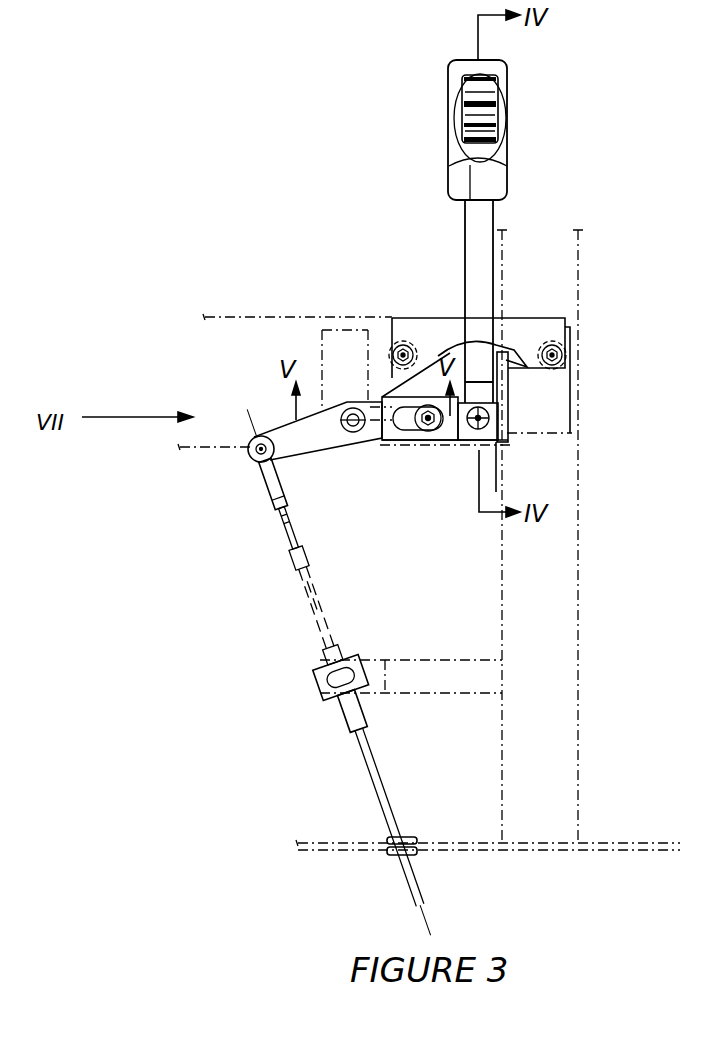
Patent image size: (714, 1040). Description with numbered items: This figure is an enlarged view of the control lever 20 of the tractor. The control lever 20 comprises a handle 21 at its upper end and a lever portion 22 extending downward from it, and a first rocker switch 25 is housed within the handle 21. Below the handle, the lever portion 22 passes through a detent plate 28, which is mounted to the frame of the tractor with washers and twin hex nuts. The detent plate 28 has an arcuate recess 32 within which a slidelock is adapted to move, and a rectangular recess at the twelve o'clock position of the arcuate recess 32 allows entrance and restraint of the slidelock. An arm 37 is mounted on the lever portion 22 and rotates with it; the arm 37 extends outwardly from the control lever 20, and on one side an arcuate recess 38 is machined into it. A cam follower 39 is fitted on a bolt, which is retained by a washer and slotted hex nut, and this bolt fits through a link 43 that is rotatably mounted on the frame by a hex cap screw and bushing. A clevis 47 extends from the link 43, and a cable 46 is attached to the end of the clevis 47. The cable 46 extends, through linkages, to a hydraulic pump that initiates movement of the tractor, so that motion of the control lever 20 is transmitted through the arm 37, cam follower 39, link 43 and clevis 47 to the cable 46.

The control lever 20 is at (584, 213).
The handle 21 is at (503, 68).
The lever portion 22 is at (493, 258).
The first rocker switch 25 is at (498, 116).
The detent plate 28 is at (553, 320).
The arcuate recess 32 is at (512, 366).
The arm 37 is at (510, 405).
The arcuate recess 38 is at (395, 442).
The cam follower 39 is at (438, 446).
The link 43 is at (298, 452).
The cable 46 is at (296, 527).
The clevis 47 is at (283, 488).